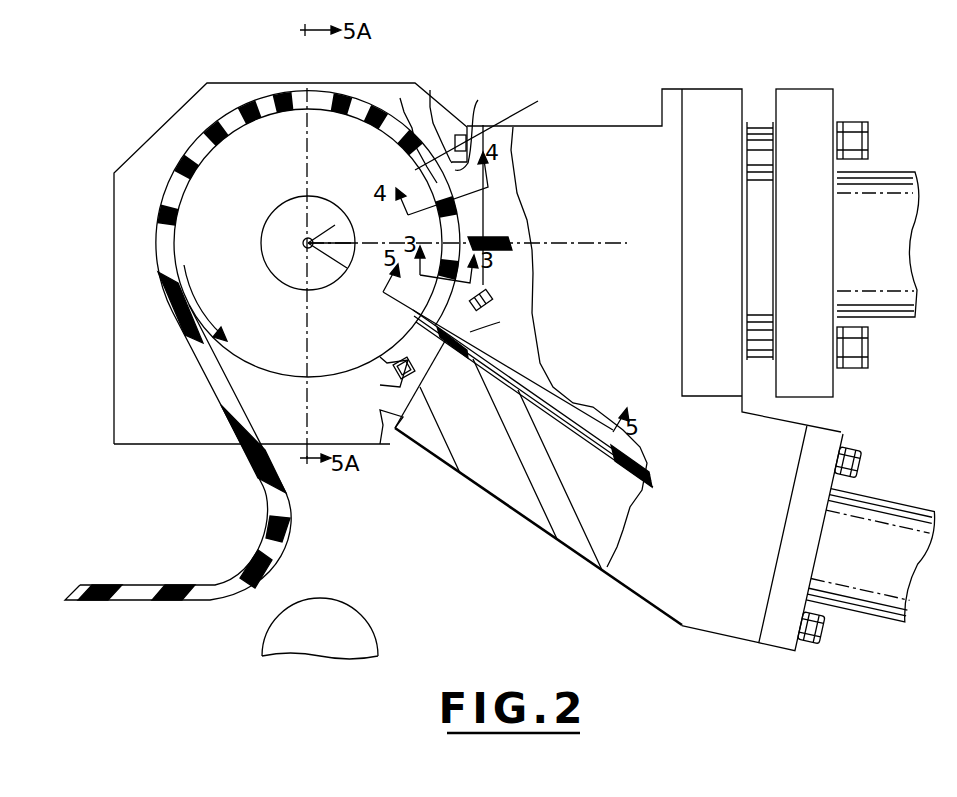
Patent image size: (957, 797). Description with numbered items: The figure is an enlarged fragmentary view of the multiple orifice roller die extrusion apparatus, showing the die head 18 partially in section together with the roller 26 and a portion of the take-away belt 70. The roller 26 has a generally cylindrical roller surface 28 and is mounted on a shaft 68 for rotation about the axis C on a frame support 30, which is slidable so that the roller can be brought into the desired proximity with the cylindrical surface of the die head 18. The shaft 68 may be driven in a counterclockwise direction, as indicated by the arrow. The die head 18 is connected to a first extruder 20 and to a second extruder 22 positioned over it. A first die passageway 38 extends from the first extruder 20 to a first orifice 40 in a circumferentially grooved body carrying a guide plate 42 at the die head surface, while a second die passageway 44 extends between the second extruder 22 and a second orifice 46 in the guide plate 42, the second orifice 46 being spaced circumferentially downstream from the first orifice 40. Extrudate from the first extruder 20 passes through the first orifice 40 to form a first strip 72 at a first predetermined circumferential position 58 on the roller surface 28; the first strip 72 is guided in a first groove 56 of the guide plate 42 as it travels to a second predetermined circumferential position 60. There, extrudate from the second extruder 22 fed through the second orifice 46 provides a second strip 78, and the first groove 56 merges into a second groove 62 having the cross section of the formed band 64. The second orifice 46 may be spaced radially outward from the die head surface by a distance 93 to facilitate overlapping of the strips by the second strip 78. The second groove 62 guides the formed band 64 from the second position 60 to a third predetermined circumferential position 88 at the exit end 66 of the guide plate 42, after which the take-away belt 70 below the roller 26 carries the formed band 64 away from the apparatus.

The die head 18 is at (553, 126).
The first extruder 20 is at (885, 503).
The second extruder 22 is at (873, 178).
The roller 26 is at (223, 155).
The cylindrical roller surface 28 is at (247, 123).
The frame support 30 is at (122, 404).
The first die passageway 38 is at (553, 422).
The first orifice 40 is at (398, 369).
The guide plate 42 is at (398, 432).
The second die passageway 44 is at (530, 240).
The second orifice 46 is at (480, 228).
The first groove 56 is at (500, 321).
The first predetermined circumferential position 58 is at (410, 318).
The second predetermined circumferential position 60 is at (410, 305).
The second groove 62 is at (480, 120).
The formed band 64 is at (306, 100).
The exit end 66 is at (430, 90).
The shaft 68 is at (280, 210).
The take-away belt 70 is at (283, 598).
The first strip 72 is at (492, 300).
The second strip 78 is at (430, 176).
The third predetermined circumferential position 88 is at (400, 98).
The distance 93 is at (420, 218).
The axis C— C is at (265, 243).